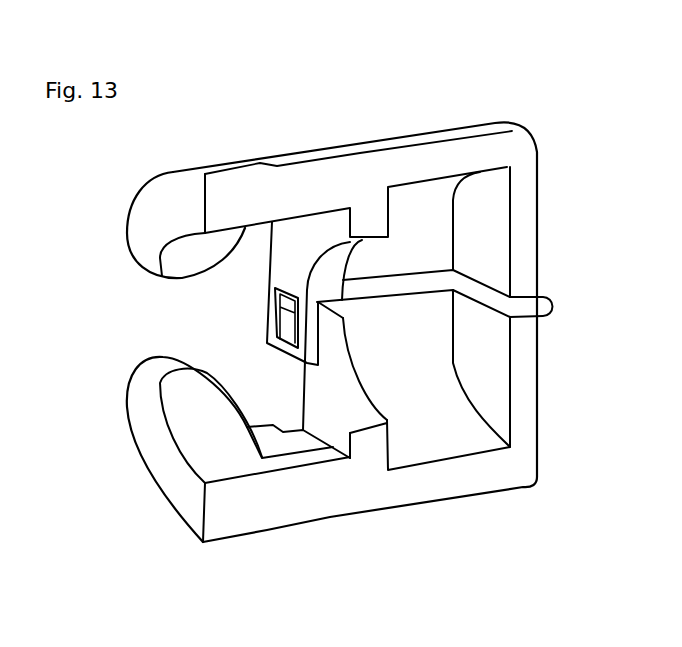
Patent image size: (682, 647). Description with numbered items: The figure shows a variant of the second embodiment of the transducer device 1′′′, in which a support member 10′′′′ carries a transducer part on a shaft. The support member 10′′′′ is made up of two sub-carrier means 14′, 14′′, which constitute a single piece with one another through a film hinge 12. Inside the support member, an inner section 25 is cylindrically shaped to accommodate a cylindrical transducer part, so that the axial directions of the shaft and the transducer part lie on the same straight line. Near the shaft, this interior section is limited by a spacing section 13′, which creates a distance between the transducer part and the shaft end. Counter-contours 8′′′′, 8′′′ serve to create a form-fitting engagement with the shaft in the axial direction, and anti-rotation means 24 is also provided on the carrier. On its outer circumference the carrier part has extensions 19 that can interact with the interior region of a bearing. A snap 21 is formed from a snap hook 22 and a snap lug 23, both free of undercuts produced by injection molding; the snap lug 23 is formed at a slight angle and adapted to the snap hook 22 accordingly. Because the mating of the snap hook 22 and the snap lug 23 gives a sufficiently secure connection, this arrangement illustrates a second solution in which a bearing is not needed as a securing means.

The transducer device 1′′′ is at (588, 76).
The support member 10′′′′ is at (387, 128).
The sub-carrier means 14′ is at (325, 175).
The counter-contour 8′′′′ is at (150, 235).
The counter-contour 8′′′ is at (152, 397).
The extension 19 is at (222, 546).
The anti-rotation means 24 is at (283, 440).
The snap means 21 is at (250, 322).
The snap lug 23 is at (271, 316).
The snap hook 22 is at (282, 332).
The spacing means 13′ is at (363, 434).
The sub-carrier means 14′′ is at (390, 494).
The inner section 25 is at (437, 416).
The film hinge 12 is at (553, 303).